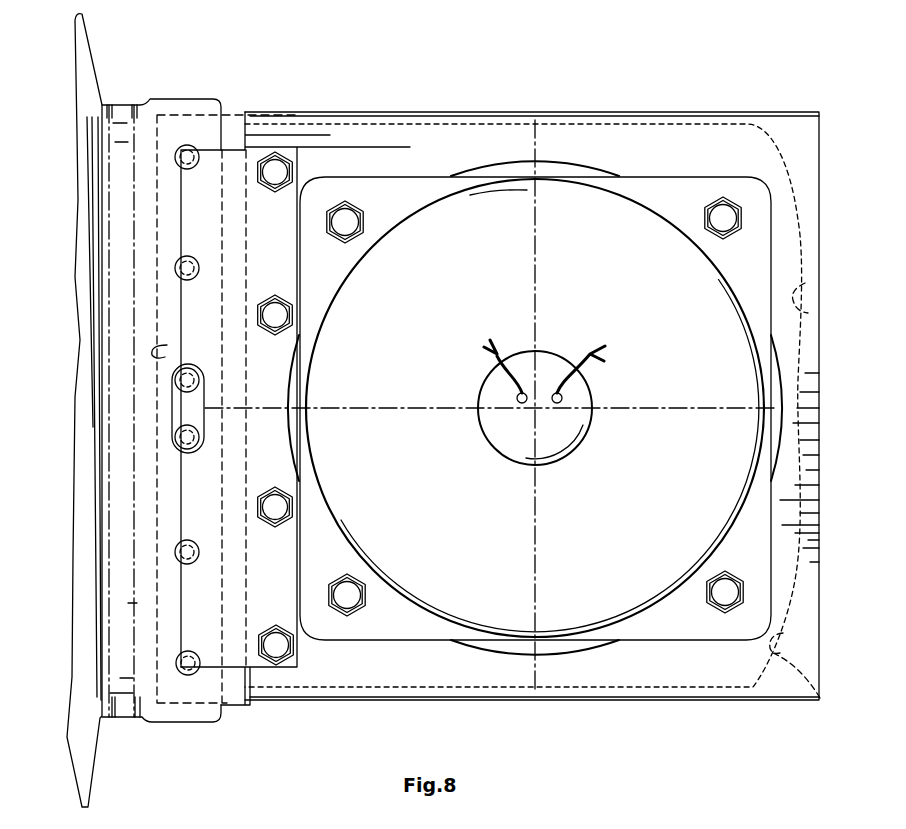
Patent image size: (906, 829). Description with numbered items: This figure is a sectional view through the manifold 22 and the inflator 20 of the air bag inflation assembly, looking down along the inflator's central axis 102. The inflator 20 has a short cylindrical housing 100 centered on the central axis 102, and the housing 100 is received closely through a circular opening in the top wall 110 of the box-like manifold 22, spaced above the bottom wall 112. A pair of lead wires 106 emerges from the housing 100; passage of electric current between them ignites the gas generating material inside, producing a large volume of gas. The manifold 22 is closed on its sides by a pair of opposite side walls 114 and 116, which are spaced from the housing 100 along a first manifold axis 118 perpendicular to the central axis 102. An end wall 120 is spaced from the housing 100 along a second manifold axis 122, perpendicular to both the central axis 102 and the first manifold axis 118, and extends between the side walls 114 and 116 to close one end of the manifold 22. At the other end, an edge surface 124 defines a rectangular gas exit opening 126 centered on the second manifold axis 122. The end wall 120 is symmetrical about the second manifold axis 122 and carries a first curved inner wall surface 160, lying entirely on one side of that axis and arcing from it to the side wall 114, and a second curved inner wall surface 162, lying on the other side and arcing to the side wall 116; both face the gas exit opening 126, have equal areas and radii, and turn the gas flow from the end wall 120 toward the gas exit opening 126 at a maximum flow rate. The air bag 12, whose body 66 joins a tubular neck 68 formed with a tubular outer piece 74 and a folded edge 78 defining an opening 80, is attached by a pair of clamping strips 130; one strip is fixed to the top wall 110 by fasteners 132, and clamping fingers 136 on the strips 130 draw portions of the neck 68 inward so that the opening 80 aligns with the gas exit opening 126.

The air bag 12 is at (88, 34).
The body 66 is at (92, 72).
The neck 68 is at (186, 95).
The tubular outer piece 74 is at (120, 210).
The folded edge 78 is at (222, 130).
The opening 80 is at (245, 278).
The clamping strips 130 is at (190, 330).
The clamping fingers 136 is at (175, 436).
The edge surface 124 is at (160, 347).
The gas exit opening 126 is at (172, 477).
The fasteners 132 is at (275, 507).
The manifold 22 is at (815, 102).
The side wall 114 is at (670, 112).
The side wall 116 is at (607, 700).
The top wall 110 is at (723, 148).
The housing 100 is at (590, 213).
The inflator 20 is at (498, 165).
The first manifold axis 118 is at (528, 288).
The second manifold axis 122 is at (655, 406).
The central axis 102 is at (533, 410).
The lead wires 106 is at (583, 353).
The end wall 120 is at (821, 282).
The first curved inner wall surface 160 is at (812, 313).
The second curved inner wall surface 162 is at (820, 698).
The bottom wall 112 is at (708, 668).